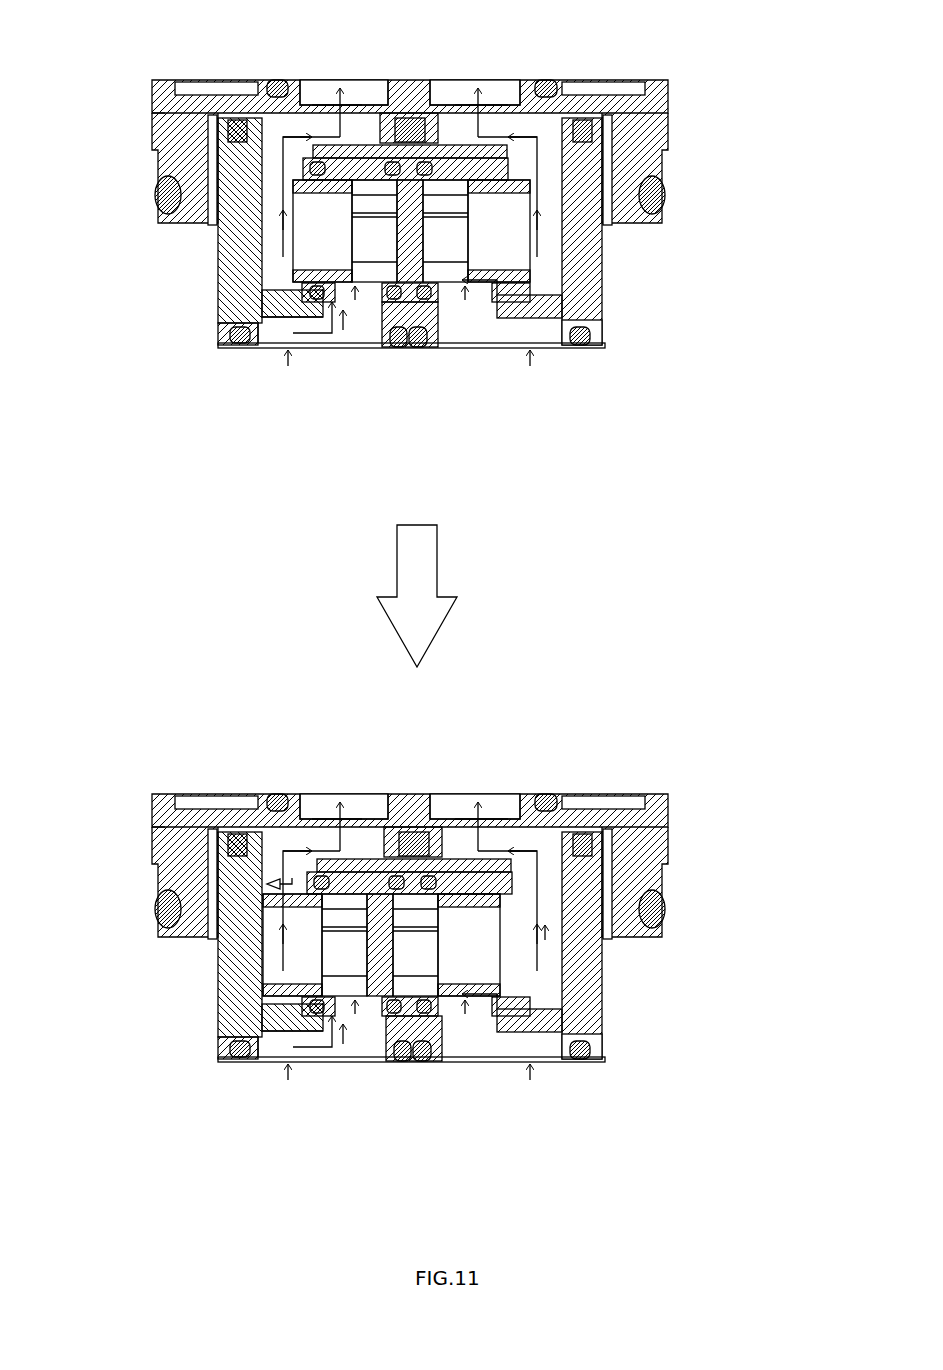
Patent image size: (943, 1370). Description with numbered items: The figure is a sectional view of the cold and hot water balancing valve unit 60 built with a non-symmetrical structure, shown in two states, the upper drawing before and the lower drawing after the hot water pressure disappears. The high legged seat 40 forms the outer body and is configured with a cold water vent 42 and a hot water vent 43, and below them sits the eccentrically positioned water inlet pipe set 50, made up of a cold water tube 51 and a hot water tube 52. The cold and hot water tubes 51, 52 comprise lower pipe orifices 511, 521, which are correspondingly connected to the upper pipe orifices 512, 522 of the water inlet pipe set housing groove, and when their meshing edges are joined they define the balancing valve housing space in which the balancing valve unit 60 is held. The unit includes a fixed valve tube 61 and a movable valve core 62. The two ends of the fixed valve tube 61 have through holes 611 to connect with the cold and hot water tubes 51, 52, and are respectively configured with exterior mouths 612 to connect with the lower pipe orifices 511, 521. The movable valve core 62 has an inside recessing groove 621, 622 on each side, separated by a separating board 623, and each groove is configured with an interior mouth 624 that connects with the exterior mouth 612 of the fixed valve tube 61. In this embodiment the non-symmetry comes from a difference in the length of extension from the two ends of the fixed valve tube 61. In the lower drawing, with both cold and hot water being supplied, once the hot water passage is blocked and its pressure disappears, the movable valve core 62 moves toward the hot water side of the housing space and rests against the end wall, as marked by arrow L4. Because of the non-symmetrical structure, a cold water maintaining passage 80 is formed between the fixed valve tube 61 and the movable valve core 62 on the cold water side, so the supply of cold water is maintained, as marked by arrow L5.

The high legged seat 40 is at (670, 125).
The cold water vent 42 is at (492, 106).
The hot water vent 43 is at (327, 104).
The water inlet pipe set 50 is at (616, 366).
The cold water tube 51 is at (605, 242).
The hot water tube 52 is at (220, 240).
The cold and hot water balancing valve unit 60 is at (160, 292).
The fixed valve tube 61 is at (223, 328).
The movable valve core 62 is at (300, 285).
The cold water maintaining passage 80 is at (563, 307).
The lower pipe orifice 511 is at (548, 337).
The upper pipe orifice 512 is at (548, 88).
The lower pipe orifice 521 is at (270, 340).
The upper pipe orifice 522 is at (275, 98).
The through hole 611 is at (505, 170).
The exterior mouth 612 is at (343, 296).
The inside recessing groove 621 is at (320, 233).
The inside recessing groove 622 is at (505, 245).
The separating board 623 is at (423, 233).
The interior mouth 624 is at (380, 273).
The arrow L4 is at (185, 885).
The arrow L5 is at (565, 937).